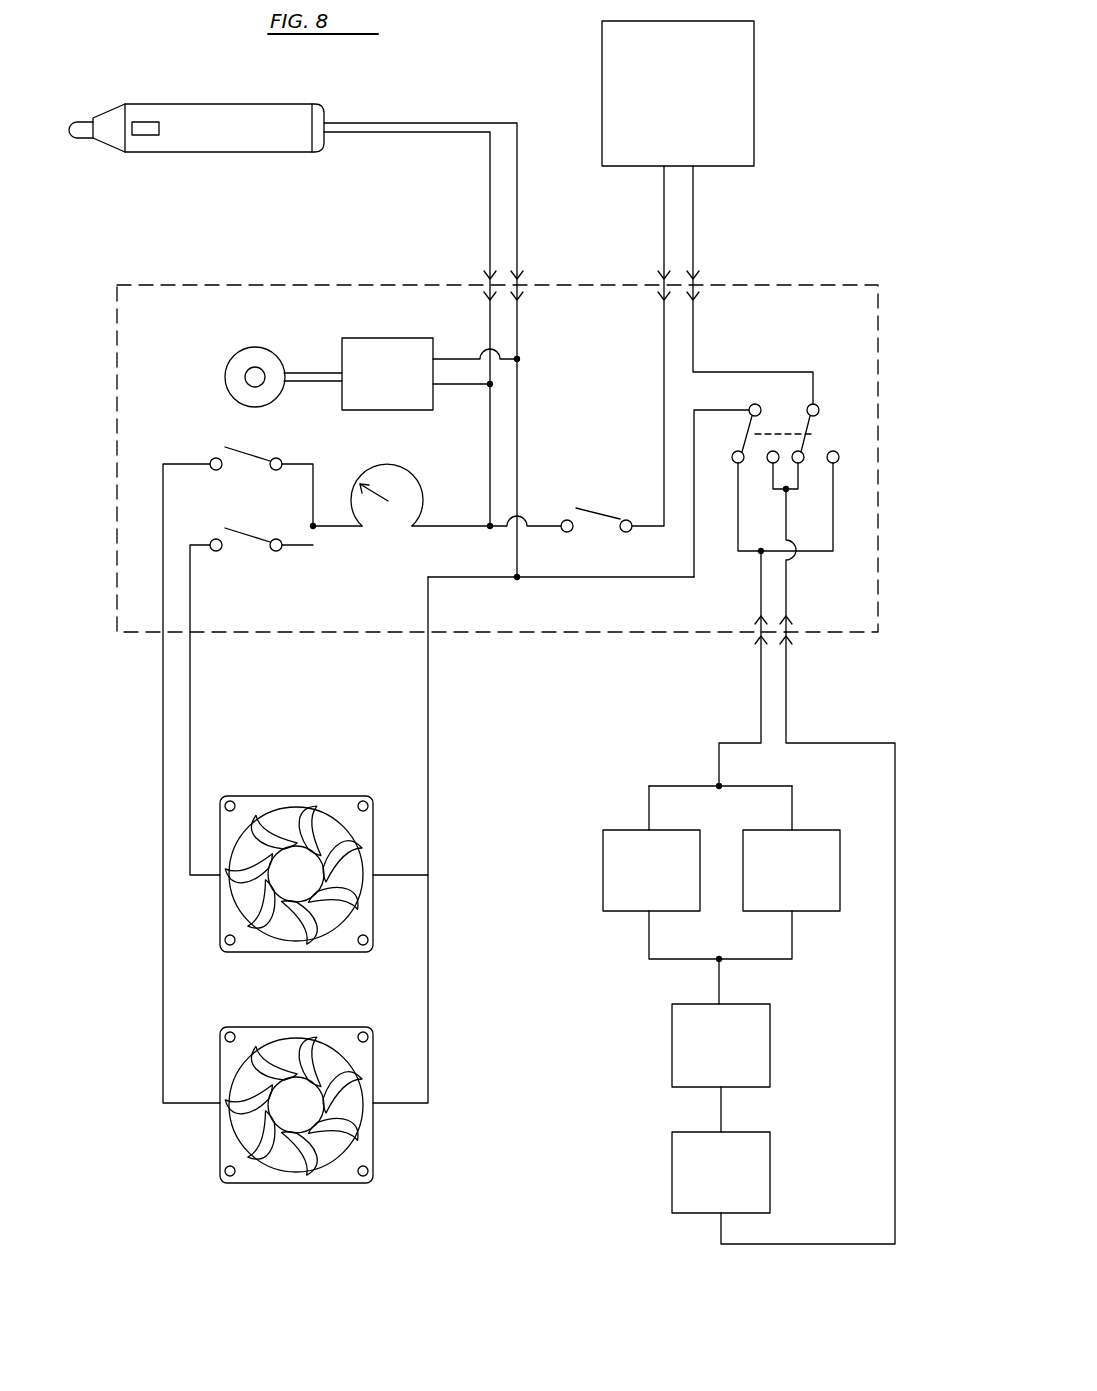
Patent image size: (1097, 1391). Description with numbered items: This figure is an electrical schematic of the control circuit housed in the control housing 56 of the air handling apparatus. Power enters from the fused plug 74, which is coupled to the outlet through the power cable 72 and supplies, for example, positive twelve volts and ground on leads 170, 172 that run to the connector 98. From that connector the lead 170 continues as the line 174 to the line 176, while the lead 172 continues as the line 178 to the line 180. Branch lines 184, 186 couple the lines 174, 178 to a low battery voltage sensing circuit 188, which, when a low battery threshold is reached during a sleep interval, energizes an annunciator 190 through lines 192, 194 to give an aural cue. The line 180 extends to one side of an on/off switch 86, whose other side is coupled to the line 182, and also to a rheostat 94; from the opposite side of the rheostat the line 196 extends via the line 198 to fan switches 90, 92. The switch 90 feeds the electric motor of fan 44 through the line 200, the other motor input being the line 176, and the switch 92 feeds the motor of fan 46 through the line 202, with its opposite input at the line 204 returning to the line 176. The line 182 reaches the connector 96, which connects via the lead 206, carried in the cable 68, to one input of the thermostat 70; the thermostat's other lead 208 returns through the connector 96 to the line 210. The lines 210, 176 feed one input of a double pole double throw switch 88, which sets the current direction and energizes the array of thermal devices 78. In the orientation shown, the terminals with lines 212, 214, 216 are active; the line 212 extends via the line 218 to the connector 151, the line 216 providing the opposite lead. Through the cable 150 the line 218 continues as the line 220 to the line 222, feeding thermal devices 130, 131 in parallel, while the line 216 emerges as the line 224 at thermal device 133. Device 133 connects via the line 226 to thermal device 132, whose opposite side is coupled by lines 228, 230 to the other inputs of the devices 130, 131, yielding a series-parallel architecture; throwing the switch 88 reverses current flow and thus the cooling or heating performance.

The fan 44 is at (292, 1047).
The fan 46 is at (290, 820).
The control housing 56 is at (803, 283).
The cable 68 is at (708, 218).
The thermostat 70 is at (743, 73).
The power cable 72 is at (512, 107).
The fused plug 74 is at (305, 112).
The array of thermal devices 78 is at (658, 1100).
The on/off switch 86 is at (620, 497).
The double pole double throw switch 88 is at (868, 410).
The fan switch 90 is at (270, 457).
The fan switch 92 is at (272, 552).
The rheostat 94 is at (418, 475).
The connector 96 is at (703, 270).
The connector 98 is at (532, 270).
The thermal device 130 is at (622, 830).
The thermal device 131 is at (818, 830).
The thermal device 132 is at (772, 1040).
The thermal device 133 is at (772, 1165).
The cable 150 is at (922, 702).
The connector 151 is at (748, 652).
The lead 170 is at (520, 162).
The lead 172 is at (490, 187).
The line 174 is at (519, 408).
The line 176 is at (587, 577).
The line 178 is at (494, 312).
The line 180 is at (430, 530).
The line 182 is at (663, 346).
The branch line 184 is at (476, 352).
The branch line 186 is at (477, 390).
The low battery voltage sensing circuit 188 is at (400, 338).
The annunciator 190 is at (237, 358).
The line 192 is at (322, 382).
The line 194 is at (322, 372).
The line 196 is at (337, 530).
The line 198 is at (313, 462).
The line 200 is at (163, 932).
The line 202 is at (192, 696).
The line 204 is at (410, 872).
The lead 206 is at (664, 201).
The line 208 is at (694, 192).
The line 210 is at (752, 372).
The line 212 is at (742, 556).
The line 214 is at (770, 482).
The line 216 is at (789, 586).
The line 218 is at (760, 600).
The line 220 is at (761, 710).
The line 222 is at (770, 785).
The line 224 is at (790, 672).
The line 226 is at (724, 1114).
The line 228 is at (722, 983).
The line 230 is at (793, 940).